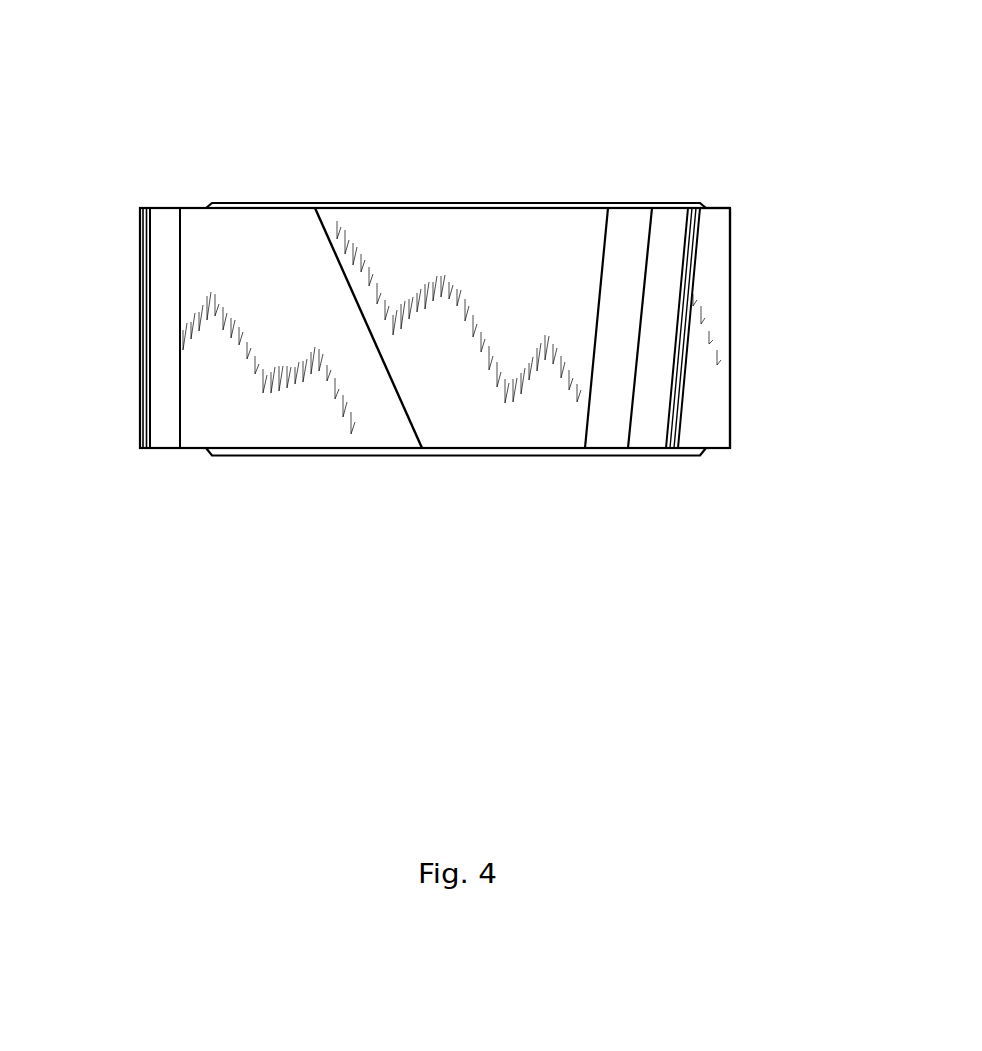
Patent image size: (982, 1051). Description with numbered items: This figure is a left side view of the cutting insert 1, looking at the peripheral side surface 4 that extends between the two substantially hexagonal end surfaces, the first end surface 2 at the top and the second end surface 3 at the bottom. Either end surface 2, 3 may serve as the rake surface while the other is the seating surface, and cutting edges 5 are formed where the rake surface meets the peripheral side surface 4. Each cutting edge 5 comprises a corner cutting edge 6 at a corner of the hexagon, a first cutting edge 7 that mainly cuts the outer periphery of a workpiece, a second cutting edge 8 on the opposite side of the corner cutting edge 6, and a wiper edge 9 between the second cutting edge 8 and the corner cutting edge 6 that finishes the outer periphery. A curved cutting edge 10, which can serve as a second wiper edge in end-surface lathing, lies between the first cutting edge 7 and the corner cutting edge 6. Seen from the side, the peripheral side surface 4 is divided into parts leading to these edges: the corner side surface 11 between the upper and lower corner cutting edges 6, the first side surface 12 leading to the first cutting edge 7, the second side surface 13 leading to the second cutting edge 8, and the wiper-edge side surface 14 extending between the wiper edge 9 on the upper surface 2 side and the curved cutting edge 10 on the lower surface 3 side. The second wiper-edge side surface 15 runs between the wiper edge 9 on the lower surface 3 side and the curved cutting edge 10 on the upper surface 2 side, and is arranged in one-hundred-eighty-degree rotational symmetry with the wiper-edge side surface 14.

The cutting insert 1 is at (233, 285).
The first end surface 2 is at (335, 203).
The second end surface 3 is at (322, 458).
The peripheral side surface 4 is at (273, 375).
The cutting edge 5 is at (522, 205).
The corner cutting edge 6 is at (670, 203).
The first cutting edge 7 is at (718, 207).
The second cutting edge 8 is at (437, 205).
The wiper edge 9 is at (630, 205).
The curved cutting edge 10 is at (690, 205).
The corner side surface 11 is at (690, 342).
The first side surface 12 is at (713, 230).
The second side surface 13 is at (467, 360).
The wiper-edge side surface 14 is at (615, 380).
The second wiper-edge side surface 15 is at (695, 267).